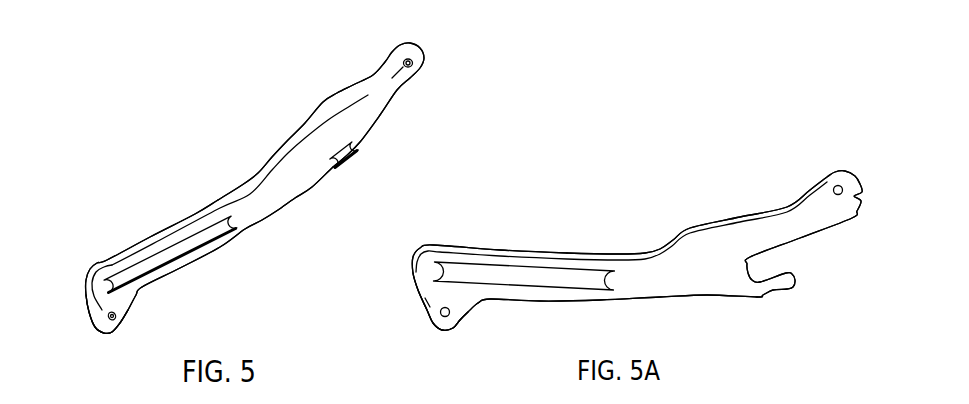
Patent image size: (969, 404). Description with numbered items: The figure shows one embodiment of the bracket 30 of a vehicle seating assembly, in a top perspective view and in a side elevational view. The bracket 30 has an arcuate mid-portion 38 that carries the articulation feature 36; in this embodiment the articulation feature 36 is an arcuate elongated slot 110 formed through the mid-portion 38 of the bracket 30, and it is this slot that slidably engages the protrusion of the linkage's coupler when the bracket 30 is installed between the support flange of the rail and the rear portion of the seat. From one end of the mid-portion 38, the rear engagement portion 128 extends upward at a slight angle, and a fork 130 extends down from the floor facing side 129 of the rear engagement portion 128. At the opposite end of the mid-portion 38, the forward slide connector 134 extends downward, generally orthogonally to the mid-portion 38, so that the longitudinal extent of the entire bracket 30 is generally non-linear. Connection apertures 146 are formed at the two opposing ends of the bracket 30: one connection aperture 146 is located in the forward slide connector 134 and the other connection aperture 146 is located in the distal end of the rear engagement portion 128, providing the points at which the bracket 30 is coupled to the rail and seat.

In FIG. 5, the bracket 30 is at (255, 203).
In FIG. 5A, the bracket 30 is at (678, 263).
In FIG. 5, the articulation feature 36 is at (180, 253).
In FIG. 5A, the articulation feature 36 is at (515, 277).
In FIG. 5, the mid-portion 38 is at (212, 213).
In FIG. 5A, the mid-portion 38 is at (543, 262).
In FIG. 5, the elongated slot 110 is at (157, 245).
In FIG. 5A, the elongated slot 110 is at (468, 273).
In FIG. 5, the rear engagement portion 128 is at (363, 83).
In FIG. 5A, the rear engagement portion 128 is at (772, 233).
In FIG. 5, the floor facing side 129 is at (277, 208).
In FIG. 5A, the floor facing side 129 is at (710, 297).
In FIG. 5, the fork 130 is at (338, 175).
In FIG. 5A, the fork 130 is at (773, 283).
In FIG. 5, the forward slide connector 134 is at (95, 325).
In FIG. 5A, the forward slide connector 134 is at (419, 311).
In FIG. 5, the connection aperture 146 is at (415, 67).
In FIG. 5A, the connection aperture 146 is at (843, 188).